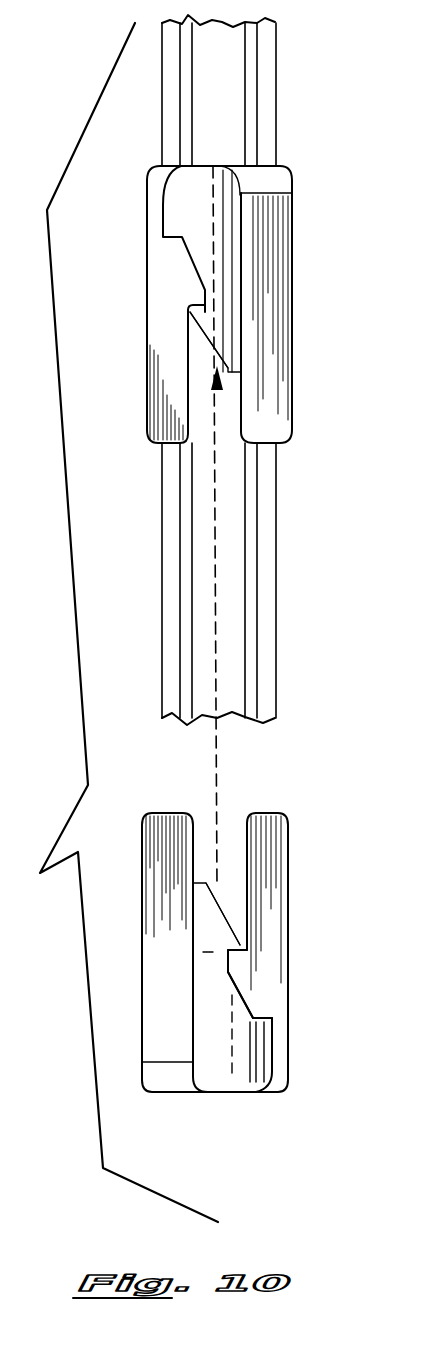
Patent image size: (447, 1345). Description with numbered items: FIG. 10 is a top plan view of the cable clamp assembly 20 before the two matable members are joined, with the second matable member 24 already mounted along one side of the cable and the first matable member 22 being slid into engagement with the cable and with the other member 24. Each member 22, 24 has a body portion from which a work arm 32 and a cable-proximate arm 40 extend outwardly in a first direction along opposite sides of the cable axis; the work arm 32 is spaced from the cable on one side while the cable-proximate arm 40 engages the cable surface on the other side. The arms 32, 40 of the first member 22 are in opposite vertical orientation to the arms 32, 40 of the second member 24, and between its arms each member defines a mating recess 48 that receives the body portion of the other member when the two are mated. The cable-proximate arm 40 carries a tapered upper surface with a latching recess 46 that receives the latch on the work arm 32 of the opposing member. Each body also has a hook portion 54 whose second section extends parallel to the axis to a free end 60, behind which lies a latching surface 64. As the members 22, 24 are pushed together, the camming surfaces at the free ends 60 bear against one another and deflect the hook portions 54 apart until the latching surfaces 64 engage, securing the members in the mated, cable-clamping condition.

The connector assembly 20 is at (50, 547).
The first matable member 22 is at (126, 1010).
The second matable member 24 is at (118, 239).
The work arm 32 is at (130, 324).
The cable-proximate arm 40 is at (306, 242).
The latching recess 46 is at (286, 178).
The mating recess 48 is at (232, 408).
The hook portion 54 is at (254, 282).
The free end 60 is at (208, 356).
The latching surface 64 is at (190, 262).